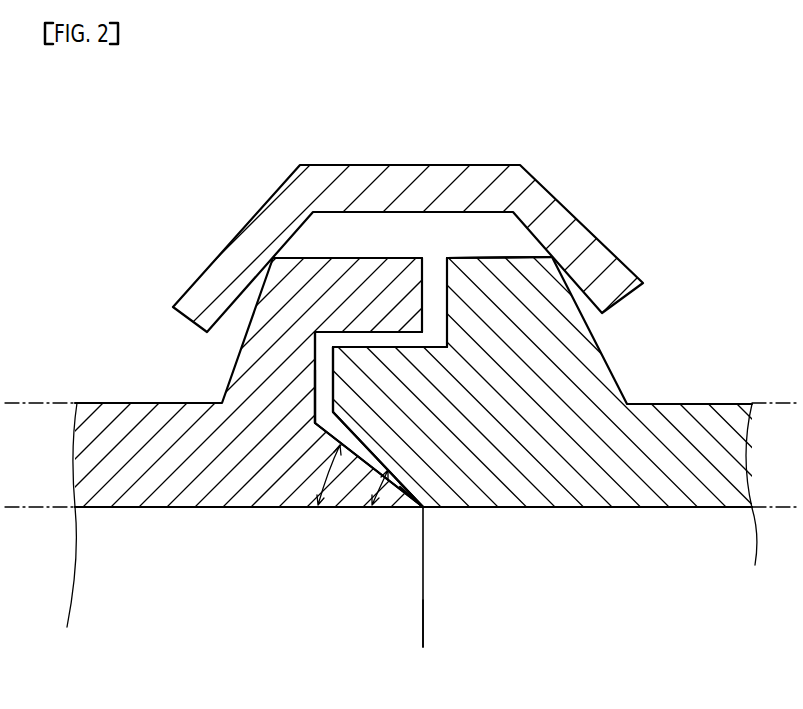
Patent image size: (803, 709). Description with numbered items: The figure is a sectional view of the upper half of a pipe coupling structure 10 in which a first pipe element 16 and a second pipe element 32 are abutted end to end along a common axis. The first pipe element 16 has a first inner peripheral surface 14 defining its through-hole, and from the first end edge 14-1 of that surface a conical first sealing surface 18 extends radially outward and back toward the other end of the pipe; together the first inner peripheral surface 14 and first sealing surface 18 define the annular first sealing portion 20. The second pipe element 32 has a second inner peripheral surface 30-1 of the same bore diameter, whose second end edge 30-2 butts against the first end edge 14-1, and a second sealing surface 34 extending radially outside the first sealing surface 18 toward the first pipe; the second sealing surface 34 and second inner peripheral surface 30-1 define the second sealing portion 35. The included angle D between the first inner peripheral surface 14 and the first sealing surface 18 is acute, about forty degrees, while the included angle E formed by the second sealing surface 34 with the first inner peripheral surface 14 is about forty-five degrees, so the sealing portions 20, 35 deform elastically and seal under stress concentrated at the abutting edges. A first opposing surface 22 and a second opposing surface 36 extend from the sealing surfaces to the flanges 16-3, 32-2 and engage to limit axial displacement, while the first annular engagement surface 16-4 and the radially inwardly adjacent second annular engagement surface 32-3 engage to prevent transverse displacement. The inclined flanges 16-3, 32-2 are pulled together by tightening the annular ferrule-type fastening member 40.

The pipe coupling structure 10 is at (495, 90).
The first inner peripheral surface 14 is at (182, 508).
The first end edge 14-1 is at (423, 582).
The first pipe element 16 is at (117, 517).
The flange 16-3 is at (370, 257).
The first annular engagement surface 16-4 is at (356, 329).
The first sealing surface 18 is at (465, 507).
The first sealing portion 20 is at (397, 485).
The first opposing surface 22 is at (328, 360).
The second inner peripheral surface 30-1 is at (663, 508).
The second end edge 30-2 is at (423, 606).
The second pipe element 32 is at (699, 519).
The flange 32-2 is at (490, 257).
The second annular engagement surface 32-3 is at (388, 347).
The second sealing surface 34 is at (477, 497).
The second sealing portion 35 is at (426, 499).
The second opposing surface 36 is at (333, 404).
The fastening member 40 is at (544, 138).
The included angle D is at (318, 505).
The included angle E is at (372, 505).